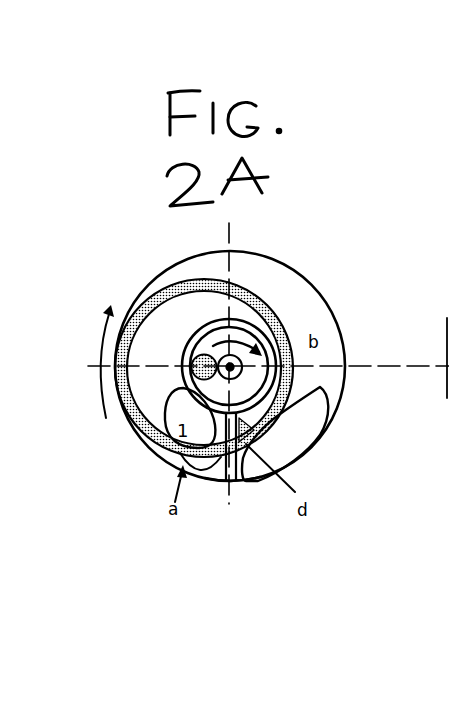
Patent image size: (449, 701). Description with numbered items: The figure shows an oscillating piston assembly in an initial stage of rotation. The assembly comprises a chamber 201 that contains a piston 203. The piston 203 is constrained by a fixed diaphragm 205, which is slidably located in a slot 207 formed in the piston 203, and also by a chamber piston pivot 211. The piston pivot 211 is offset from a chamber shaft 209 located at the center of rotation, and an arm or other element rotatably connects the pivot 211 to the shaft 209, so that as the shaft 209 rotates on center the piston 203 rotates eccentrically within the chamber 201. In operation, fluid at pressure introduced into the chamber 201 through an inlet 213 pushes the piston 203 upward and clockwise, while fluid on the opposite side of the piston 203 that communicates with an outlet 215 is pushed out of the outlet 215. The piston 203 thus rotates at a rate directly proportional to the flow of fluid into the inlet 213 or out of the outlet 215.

The chamber 201 is at (275, 254).
The piston 203 is at (221, 278).
The fixed diaphragm 205 is at (233, 483).
The slot 207 is at (223, 455).
The chamber shaft 209 is at (200, 362).
The chamber piston pivot 211 is at (243, 366).
The inlet 213 is at (205, 452).
The outlet 215 is at (289, 447).